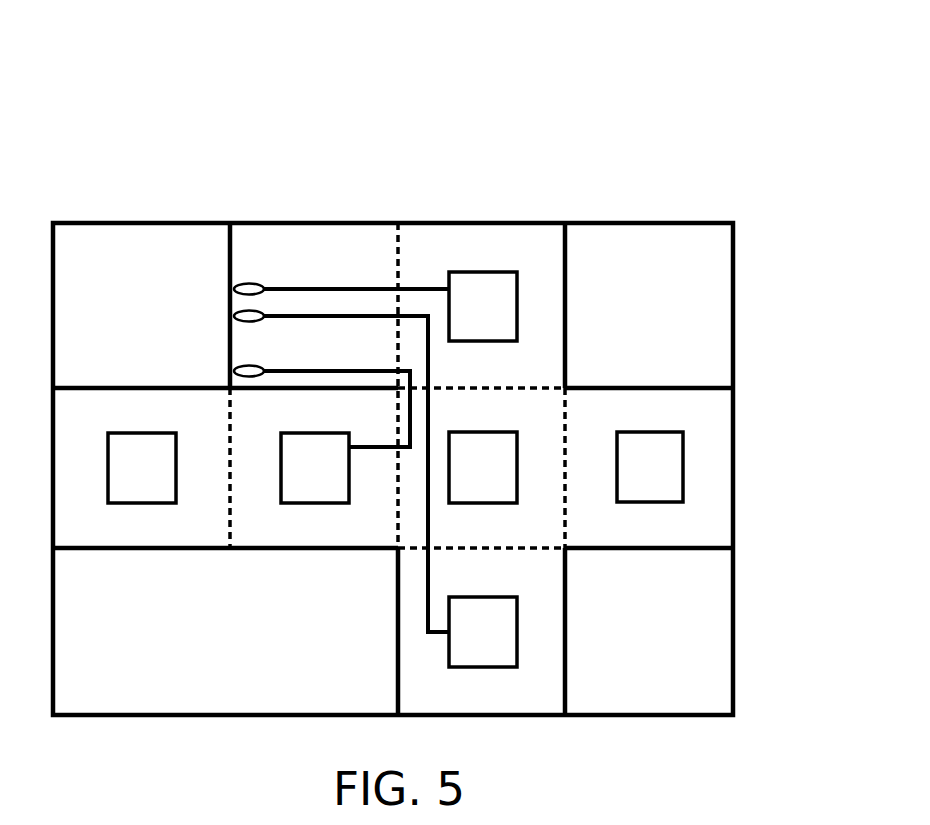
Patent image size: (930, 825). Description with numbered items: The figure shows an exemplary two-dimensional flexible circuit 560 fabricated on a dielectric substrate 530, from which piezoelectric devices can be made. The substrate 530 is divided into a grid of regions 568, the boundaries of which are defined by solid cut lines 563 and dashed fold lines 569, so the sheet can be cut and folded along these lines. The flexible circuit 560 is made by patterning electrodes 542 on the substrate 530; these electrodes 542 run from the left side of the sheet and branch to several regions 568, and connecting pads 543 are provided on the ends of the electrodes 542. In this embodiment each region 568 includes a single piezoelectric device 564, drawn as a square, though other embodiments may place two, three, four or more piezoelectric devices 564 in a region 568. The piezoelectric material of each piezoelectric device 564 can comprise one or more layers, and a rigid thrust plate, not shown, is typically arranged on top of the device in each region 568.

The two-dimensional flexible circuit 560 is at (707, 147).
The dielectric substrate 530 is at (718, 280).
The cut lines 563 is at (230, 322).
The fold lines 569 is at (428, 222).
The regions 568 is at (479, 377).
The piezoelectric device 564 is at (477, 272).
The electrodes 542 is at (338, 288).
The connecting pads 543 is at (248, 285).